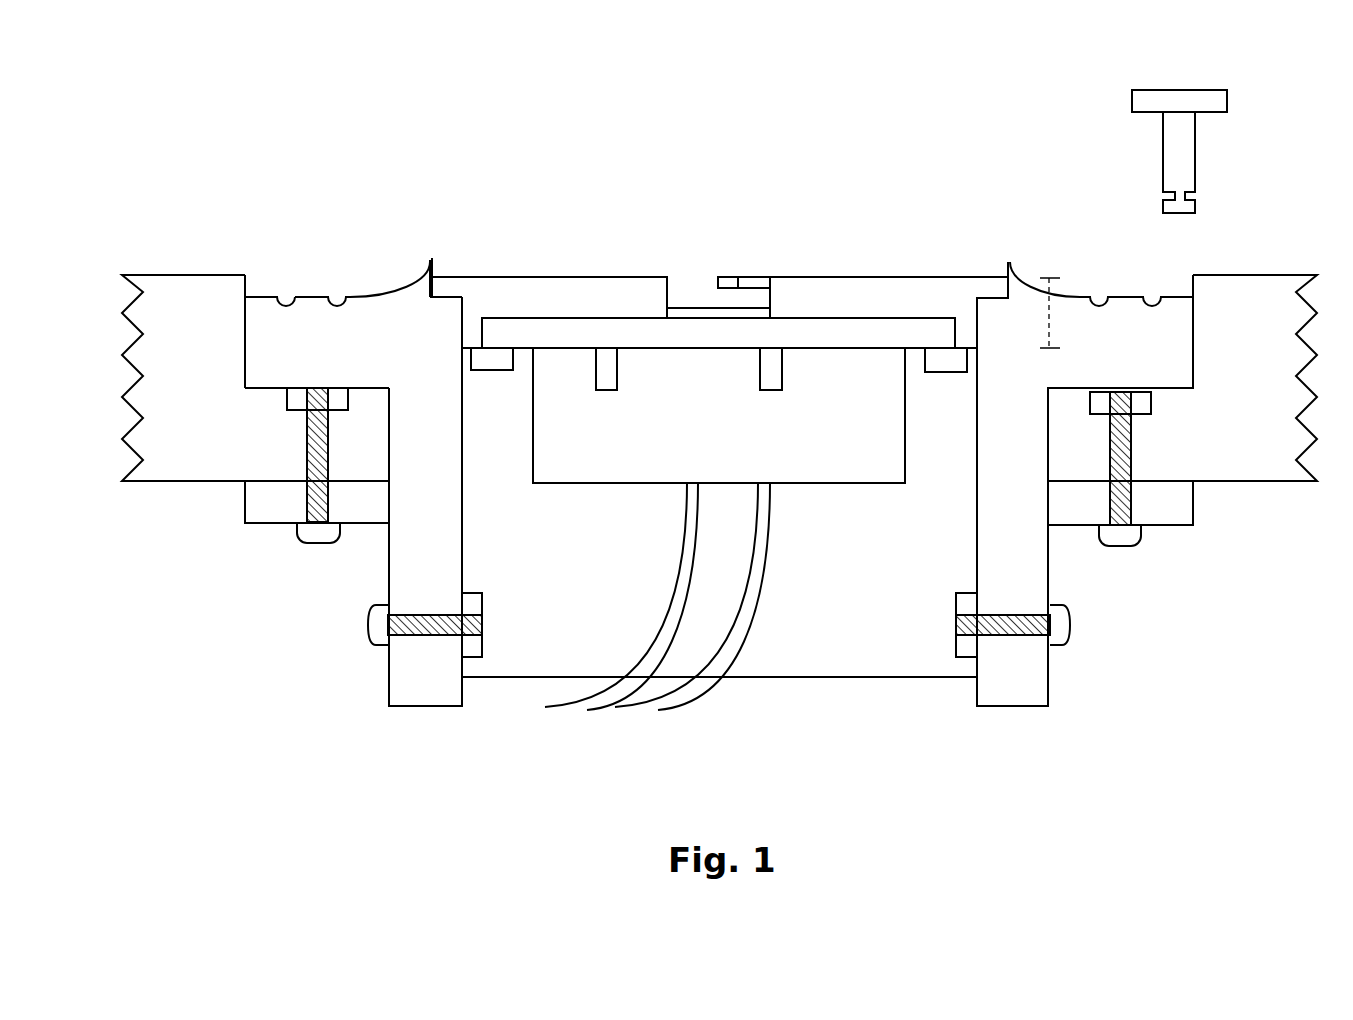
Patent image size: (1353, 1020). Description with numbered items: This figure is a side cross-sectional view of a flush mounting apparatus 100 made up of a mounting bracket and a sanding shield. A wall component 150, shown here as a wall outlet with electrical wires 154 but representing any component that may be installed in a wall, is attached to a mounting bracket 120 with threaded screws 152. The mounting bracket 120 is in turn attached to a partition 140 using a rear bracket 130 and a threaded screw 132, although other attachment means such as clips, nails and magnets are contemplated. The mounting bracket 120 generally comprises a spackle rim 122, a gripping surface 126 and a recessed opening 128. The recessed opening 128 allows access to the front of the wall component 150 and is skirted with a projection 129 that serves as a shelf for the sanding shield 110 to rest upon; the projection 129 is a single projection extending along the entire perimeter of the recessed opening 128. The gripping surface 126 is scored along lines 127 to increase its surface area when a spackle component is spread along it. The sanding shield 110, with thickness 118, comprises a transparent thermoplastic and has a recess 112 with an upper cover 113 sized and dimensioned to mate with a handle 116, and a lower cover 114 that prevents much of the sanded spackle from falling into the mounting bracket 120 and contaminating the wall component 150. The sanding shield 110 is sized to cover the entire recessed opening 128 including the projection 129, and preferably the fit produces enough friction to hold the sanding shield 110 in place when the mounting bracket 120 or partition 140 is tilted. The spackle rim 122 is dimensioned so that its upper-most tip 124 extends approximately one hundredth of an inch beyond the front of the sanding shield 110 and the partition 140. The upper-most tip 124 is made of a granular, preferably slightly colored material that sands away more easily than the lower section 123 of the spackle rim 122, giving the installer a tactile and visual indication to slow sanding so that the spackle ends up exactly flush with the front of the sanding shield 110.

The flush mounting apparatus 100 is at (213, 135).
The sanding shield 110 is at (938, 273).
The recess 112 is at (695, 268).
The upper cover 113 is at (748, 277).
The lower cover 114 is at (773, 312).
The handle 116 is at (1130, 100).
The thickness 118 is at (1066, 313).
The mounting bracket 120 is at (385, 690).
The spackle rim 122 is at (432, 208).
The lower section 123 is at (392, 295).
The upper-most tip 124 is at (427, 268).
The gripping surface 126 is at (358, 260).
The lines 127 is at (291, 296).
The recessed opening 128 is at (998, 190).
The projection 129 is at (1000, 296).
The rear bracket 130 is at (245, 493).
The threaded screw 132 is at (317, 544).
The partition 140 is at (215, 273).
The wall component 150 is at (880, 682).
The threaded screws 152 is at (367, 627).
The electrical wires 154 is at (703, 681).